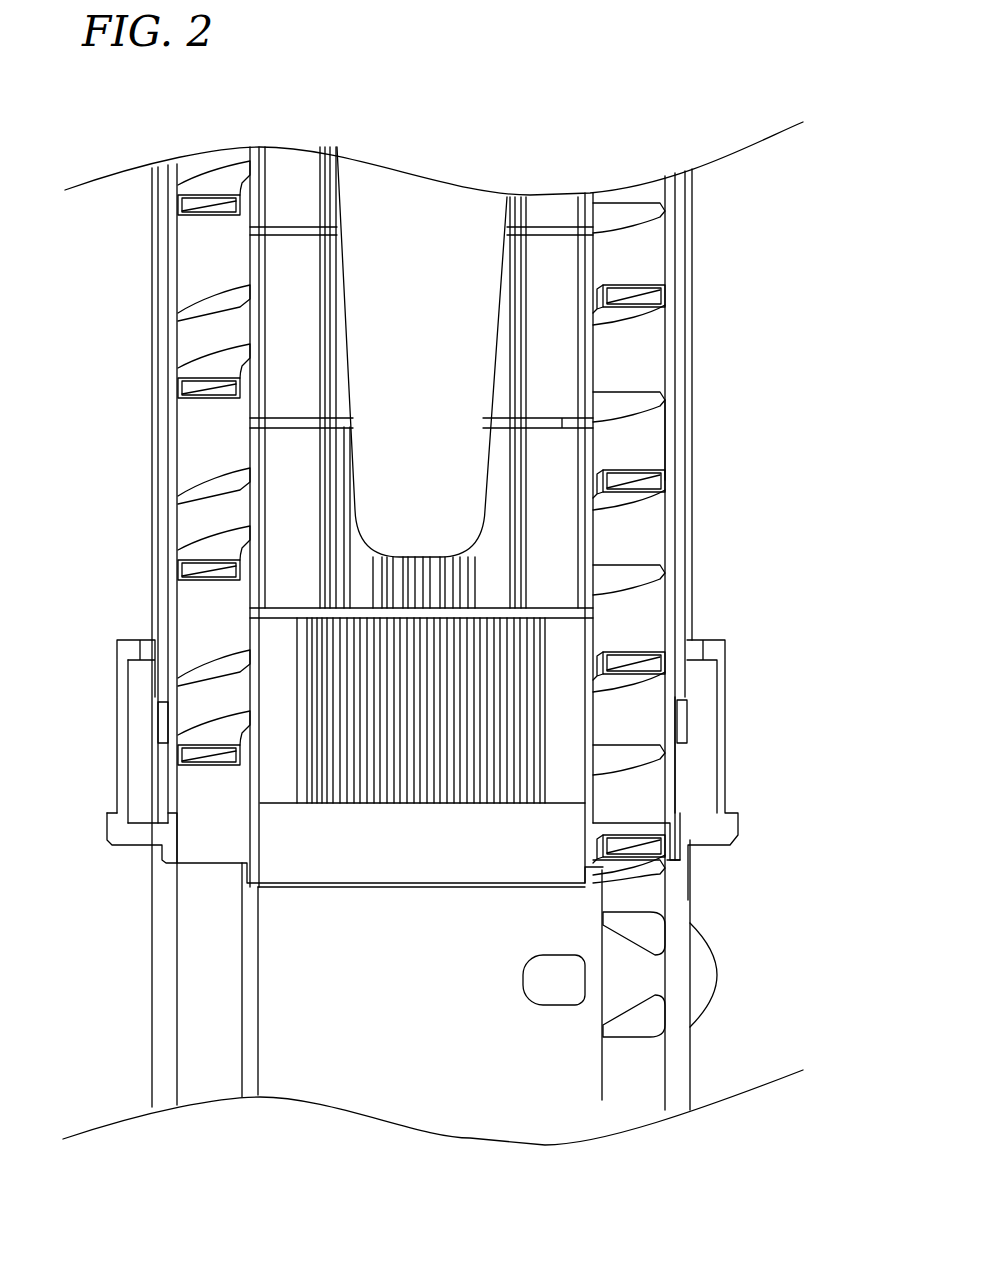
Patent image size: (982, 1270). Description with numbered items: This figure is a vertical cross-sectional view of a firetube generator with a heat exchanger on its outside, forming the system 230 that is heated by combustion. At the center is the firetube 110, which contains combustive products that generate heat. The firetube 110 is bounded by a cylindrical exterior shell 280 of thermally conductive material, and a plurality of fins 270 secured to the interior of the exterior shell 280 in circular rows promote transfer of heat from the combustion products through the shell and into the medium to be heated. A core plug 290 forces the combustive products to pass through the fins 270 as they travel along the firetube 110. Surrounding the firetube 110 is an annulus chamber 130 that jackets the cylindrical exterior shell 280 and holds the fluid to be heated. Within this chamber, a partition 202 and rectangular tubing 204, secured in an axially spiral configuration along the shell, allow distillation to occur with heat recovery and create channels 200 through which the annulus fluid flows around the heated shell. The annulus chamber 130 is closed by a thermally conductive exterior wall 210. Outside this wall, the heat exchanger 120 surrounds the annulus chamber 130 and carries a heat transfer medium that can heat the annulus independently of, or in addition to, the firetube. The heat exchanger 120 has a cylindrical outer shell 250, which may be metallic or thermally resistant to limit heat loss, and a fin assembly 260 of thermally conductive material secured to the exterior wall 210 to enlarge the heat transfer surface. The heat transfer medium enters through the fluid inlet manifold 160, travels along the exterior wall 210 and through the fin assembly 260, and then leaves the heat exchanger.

The firetube 110 is at (326, 375).
The heat exchanger 120 is at (690, 198).
The annulus chamber 130 is at (638, 348).
The fluid inlet manifold 160 is at (725, 725).
The channels 200 is at (197, 607).
The partition 202 is at (185, 672).
The rectangular tubing 204 is at (183, 752).
The exterior wall 210 is at (674, 255).
The system 230 is at (774, 452).
The cylindrical outer shell 250 is at (692, 497).
The fin assembly 260 is at (686, 540).
The fins 270 is at (282, 520).
The cylindrical exterior shell 280 is at (246, 325).
The core plug 290 is at (340, 207).